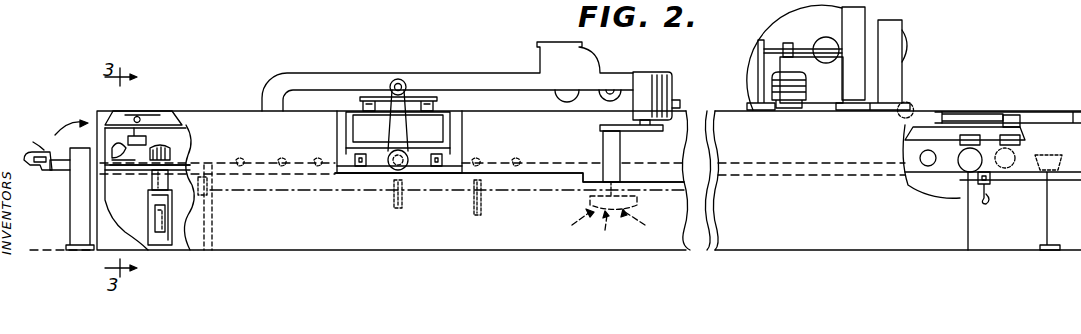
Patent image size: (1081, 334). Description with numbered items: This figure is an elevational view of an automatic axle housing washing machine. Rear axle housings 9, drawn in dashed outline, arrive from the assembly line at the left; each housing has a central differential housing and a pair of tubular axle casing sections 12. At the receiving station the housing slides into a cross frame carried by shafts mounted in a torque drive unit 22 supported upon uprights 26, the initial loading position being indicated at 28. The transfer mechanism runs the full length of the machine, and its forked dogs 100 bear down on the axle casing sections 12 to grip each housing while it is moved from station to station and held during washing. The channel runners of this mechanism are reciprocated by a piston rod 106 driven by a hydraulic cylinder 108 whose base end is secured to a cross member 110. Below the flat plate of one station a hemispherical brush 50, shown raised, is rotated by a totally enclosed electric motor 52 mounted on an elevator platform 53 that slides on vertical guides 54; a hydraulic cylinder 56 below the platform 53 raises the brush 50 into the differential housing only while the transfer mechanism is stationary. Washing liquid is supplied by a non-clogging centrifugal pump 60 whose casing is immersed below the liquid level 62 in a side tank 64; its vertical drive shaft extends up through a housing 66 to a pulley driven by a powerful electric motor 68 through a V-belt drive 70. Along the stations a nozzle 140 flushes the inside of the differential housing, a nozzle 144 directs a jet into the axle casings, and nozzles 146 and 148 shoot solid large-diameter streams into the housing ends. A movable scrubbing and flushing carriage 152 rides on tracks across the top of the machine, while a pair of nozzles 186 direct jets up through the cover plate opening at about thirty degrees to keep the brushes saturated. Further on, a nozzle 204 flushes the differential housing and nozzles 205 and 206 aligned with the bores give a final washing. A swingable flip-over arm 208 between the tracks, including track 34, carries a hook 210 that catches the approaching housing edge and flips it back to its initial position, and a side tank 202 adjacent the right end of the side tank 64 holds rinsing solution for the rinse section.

The rear axle housing 9 is at (26, 156).
The axle casing section 12 is at (45, 170).
The torque drive unit 22 is at (90, 147).
The upright 26 is at (70, 220).
The loading position 28 is at (40, 146).
The track 34 is at (125, 172).
The hemispherical brush 50 is at (172, 160).
The electric motor 52 is at (152, 186).
The elevator platform 53 is at (172, 214).
The vertical guide 54 is at (150, 205).
The hydraulic cylinder 56 is at (172, 235).
The centrifugal pump 60 is at (646, 195).
The liquid level 62 is at (535, 178).
The side tank 64 is at (345, 243).
The housing 66 is at (603, 150).
The electric motor 68 is at (668, 76).
The V-belt drive 70 is at (637, 134).
The forked dog 100 is at (920, 150).
The piston rod 106 is at (1020, 114).
The hydraulic cylinder 108 is at (975, 116).
The cross member 110 is at (935, 118).
The nozzle 140 is at (212, 192).
The nozzle 144 is at (236, 162).
The nozzle 146 is at (284, 168).
The nozzle 148 is at (318, 168).
The scrubbing and flushing carriage 152 is at (325, 127).
The nozzle 186 is at (403, 206).
The side tank 202 is at (690, 238).
The nozzle 204 is at (481, 214).
The nozzle 205 is at (475, 158).
The nozzle 206 is at (516, 158).
The flip-over arm 208 is at (995, 205).
The hook 210 is at (998, 180).